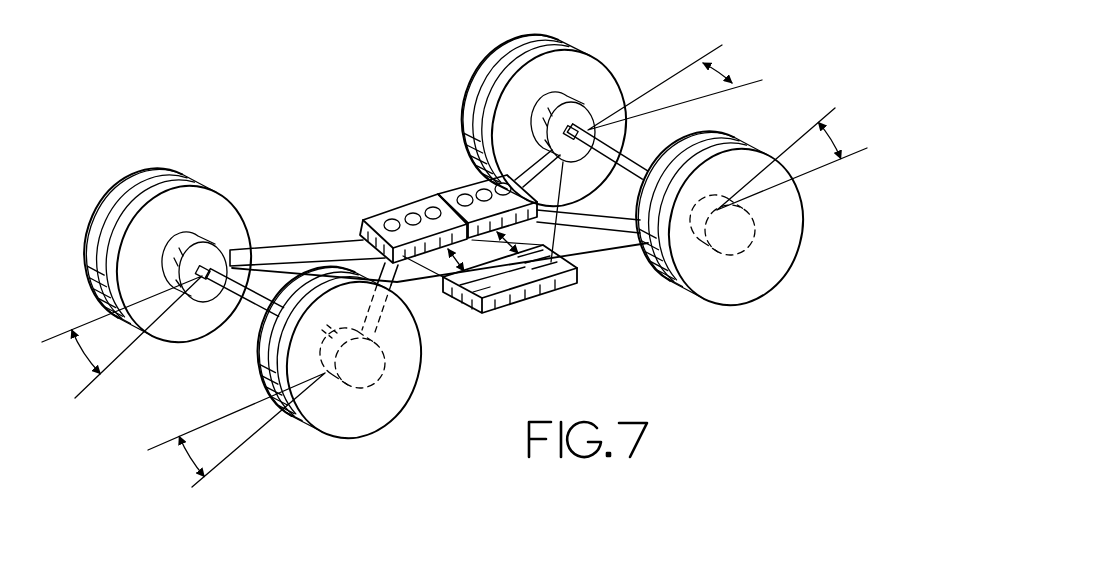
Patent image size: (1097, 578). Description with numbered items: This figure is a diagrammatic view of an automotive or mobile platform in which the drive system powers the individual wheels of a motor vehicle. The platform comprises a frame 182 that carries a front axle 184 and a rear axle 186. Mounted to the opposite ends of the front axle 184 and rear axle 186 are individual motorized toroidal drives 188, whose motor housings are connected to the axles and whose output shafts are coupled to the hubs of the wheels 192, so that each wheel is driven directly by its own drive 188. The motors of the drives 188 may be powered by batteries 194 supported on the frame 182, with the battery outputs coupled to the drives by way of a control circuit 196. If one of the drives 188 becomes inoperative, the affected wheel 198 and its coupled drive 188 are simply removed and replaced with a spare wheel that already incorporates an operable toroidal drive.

The frame 182 is at (267, 253).
The front axle 184 is at (245, 303).
The rear axle 186 is at (645, 150).
The motorized toroidal drive 188 is at (208, 257).
The wheel 192 is at (148, 188).
The batteries 194 is at (450, 192).
The control circuit 196 is at (557, 292).
The wheel 198 is at (437, 296).